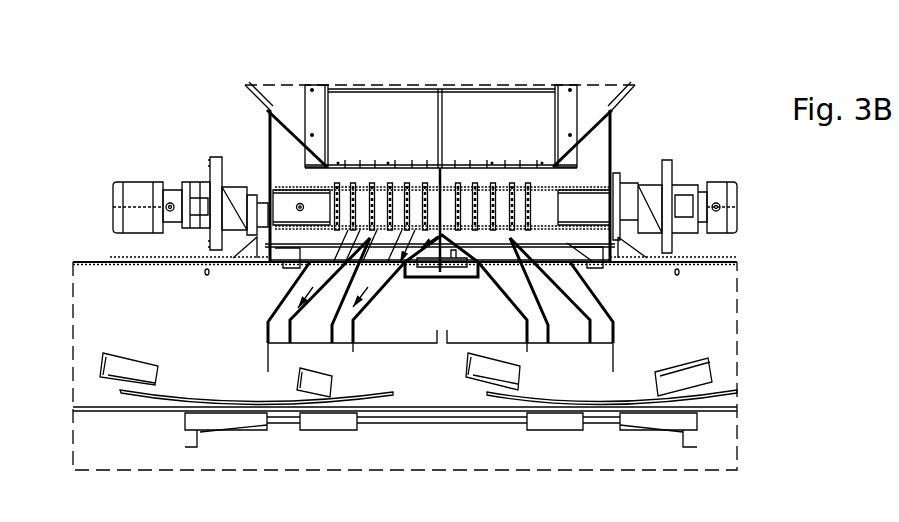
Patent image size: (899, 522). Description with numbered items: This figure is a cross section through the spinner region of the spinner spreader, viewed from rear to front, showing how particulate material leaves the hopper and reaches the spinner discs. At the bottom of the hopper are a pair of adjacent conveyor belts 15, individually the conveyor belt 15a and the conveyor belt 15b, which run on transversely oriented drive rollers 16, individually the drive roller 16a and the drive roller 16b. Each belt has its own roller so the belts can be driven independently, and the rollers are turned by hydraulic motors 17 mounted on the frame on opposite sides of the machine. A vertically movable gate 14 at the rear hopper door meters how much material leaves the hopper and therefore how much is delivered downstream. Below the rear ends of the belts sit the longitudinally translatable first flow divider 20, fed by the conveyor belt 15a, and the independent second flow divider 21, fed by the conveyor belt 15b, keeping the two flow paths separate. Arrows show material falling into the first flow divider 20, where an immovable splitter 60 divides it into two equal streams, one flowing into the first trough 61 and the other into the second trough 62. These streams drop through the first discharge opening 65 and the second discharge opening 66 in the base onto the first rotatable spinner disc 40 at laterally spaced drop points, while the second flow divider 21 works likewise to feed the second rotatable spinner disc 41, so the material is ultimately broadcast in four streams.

The vertically movable gate 14 is at (407, 122).
The conveyor belts 15 is at (441, 128).
The conveyor belt 15a is at (378, 193).
The conveyor belt 15b is at (525, 193).
The drive rollers 16 is at (439, 121).
The drive roller 16a is at (293, 200).
The drive roller 16b is at (587, 203).
The hydraulic motors 17 is at (130, 192).
The first flow divider 20 is at (272, 290).
The second flow divider 21 is at (563, 318).
The first rotatable spinner disc 40 is at (180, 393).
The second rotatable spinner disc 41 is at (690, 393).
The immovable splitter 60 is at (353, 262).
The first trough 61 is at (287, 315).
The second trough 62 is at (368, 293).
The first discharge opening 65 is at (277, 345).
The second discharge opening 66 is at (350, 347).